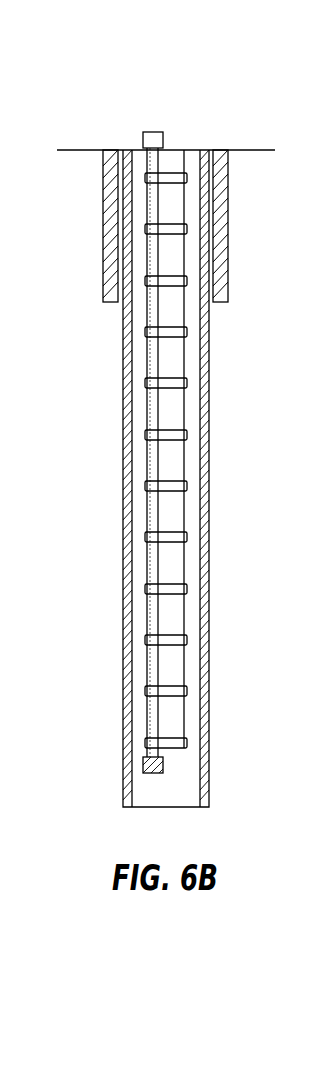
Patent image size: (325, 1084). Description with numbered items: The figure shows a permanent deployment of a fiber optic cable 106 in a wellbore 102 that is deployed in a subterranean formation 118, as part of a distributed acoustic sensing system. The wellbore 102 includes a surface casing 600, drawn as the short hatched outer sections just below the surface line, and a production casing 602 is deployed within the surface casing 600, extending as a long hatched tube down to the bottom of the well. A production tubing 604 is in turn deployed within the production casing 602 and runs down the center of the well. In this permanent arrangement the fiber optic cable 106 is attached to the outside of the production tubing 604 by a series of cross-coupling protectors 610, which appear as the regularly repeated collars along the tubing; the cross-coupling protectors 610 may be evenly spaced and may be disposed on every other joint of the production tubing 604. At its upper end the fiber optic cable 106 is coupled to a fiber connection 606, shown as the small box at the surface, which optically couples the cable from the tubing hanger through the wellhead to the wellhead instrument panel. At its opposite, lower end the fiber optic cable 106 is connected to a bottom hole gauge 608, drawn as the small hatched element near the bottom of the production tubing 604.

The wellbore 102 is at (144, 453).
The fiber optic cable 106 is at (147, 477).
The subterranean formation 118 is at (279, 440).
The surface casing 600 is at (228, 228).
The production casing 602 is at (208, 360).
The production tubing 604 is at (186, 660).
The fiber connection 606 is at (163, 140).
The bottom hole gauge 608 is at (142, 762).
The cross-coupling protectors 610 is at (146, 589).